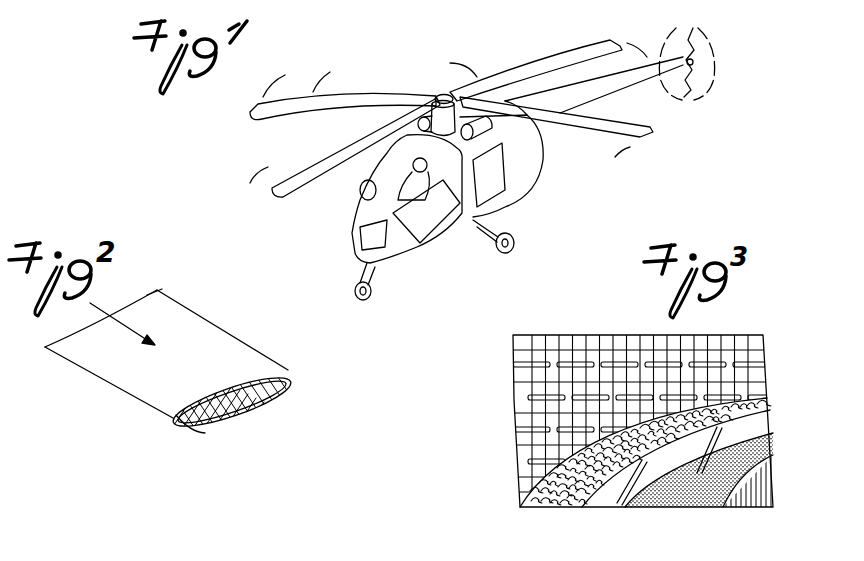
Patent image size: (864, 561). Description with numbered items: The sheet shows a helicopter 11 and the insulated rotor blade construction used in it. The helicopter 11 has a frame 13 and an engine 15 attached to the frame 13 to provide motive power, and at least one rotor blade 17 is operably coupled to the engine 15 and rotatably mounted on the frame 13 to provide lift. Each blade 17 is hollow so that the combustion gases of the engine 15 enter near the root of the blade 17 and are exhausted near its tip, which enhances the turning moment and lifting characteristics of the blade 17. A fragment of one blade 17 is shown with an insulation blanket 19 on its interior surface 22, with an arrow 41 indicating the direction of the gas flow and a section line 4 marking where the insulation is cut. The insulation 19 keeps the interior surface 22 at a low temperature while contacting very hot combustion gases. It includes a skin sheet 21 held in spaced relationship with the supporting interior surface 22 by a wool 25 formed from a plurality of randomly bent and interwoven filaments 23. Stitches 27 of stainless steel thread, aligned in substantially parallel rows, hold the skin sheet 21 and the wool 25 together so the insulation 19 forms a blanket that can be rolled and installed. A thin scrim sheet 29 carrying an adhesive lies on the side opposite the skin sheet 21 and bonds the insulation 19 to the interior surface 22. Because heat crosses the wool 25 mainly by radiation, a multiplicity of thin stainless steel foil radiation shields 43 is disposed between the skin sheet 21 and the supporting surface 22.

In FIG. 1, the helicopter 11 is at (337, 233).
In FIG. 1, the frame 13 is at (522, 186).
In FIG. 1, the engine 15 is at (507, 93).
In FIG. 1, the rotor blade 17 is at (382, 90).
In FIG. 2, the rotor blade 17 is at (207, 345).
In FIG. 2, the insulation blanket 19 is at (255, 372).
In FIG. 2, the skin sheet 21 is at (187, 428).
In FIG. 2, the interior surface 22 is at (262, 405).
In FIG. 3, the interior surface 22 is at (740, 507).
In FIG. 3, the filaments 23 is at (753, 405).
In FIG. 3, the wool 25 is at (547, 507).
In FIG. 3, the stitches 27 is at (590, 393).
In FIG. 3, the scrim sheet 29 is at (693, 497).
In FIG. 2, the direction arrow 41 is at (157, 292).
In FIG. 3, the radiation shields 43 is at (750, 420).
In FIG. 3, the section line 4- 4 is at (489, 345).